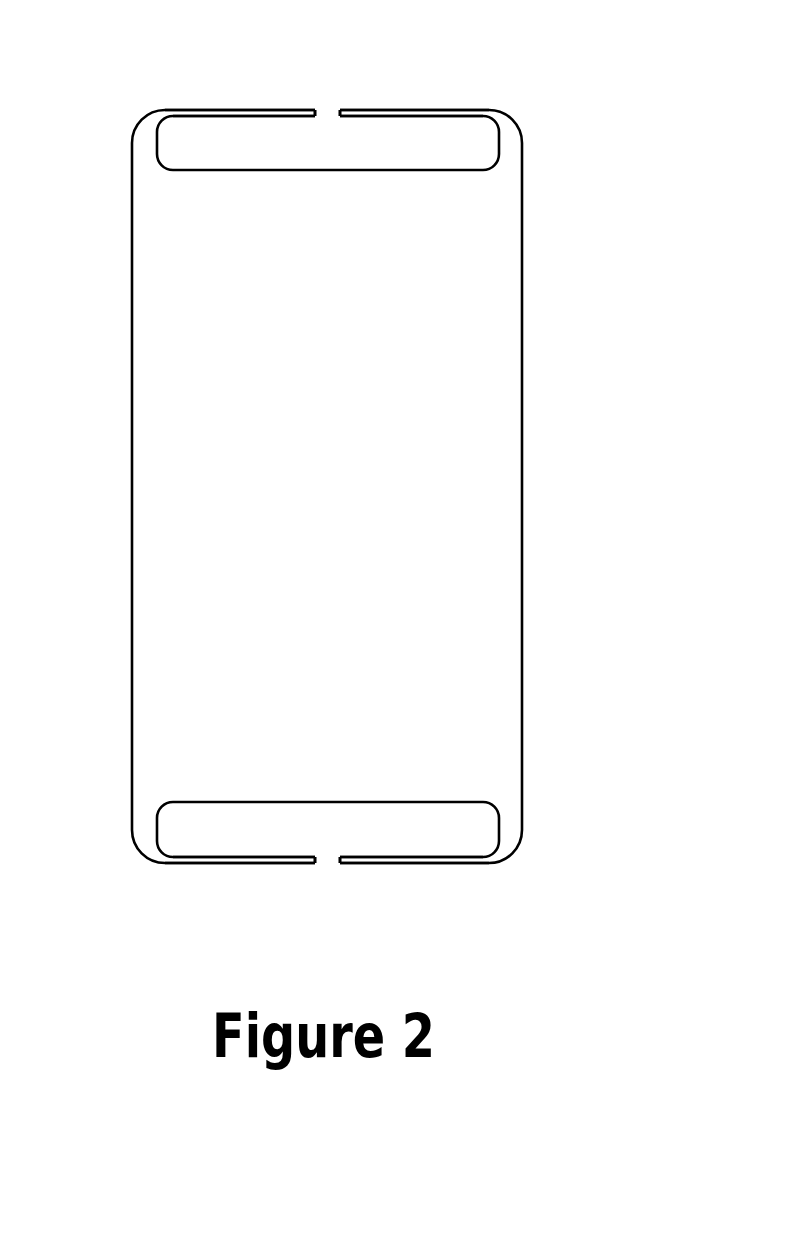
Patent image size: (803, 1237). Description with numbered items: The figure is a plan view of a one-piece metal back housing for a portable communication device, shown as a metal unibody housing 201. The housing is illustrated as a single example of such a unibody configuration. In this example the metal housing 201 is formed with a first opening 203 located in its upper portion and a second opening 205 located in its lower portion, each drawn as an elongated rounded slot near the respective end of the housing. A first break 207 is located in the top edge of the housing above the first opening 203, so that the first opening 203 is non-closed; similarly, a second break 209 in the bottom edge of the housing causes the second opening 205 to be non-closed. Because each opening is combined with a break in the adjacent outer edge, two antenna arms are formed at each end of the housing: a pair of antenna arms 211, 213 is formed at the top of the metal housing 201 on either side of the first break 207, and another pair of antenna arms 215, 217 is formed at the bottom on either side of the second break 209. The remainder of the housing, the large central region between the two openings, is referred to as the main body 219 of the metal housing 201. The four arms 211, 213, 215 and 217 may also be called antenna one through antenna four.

The metal unibody housing 201 is at (132, 67).
The first opening 203 is at (405, 152).
The second opening 205 is at (448, 828).
The first break 207 is at (328, 108).
The second break 209 is at (327, 862).
The antenna arm 211 is at (267, 108).
The antenna arm 213 is at (378, 108).
The antenna arm 215 is at (272, 862).
The antenna arm 217 is at (382, 862).
The main body 219 is at (433, 467).